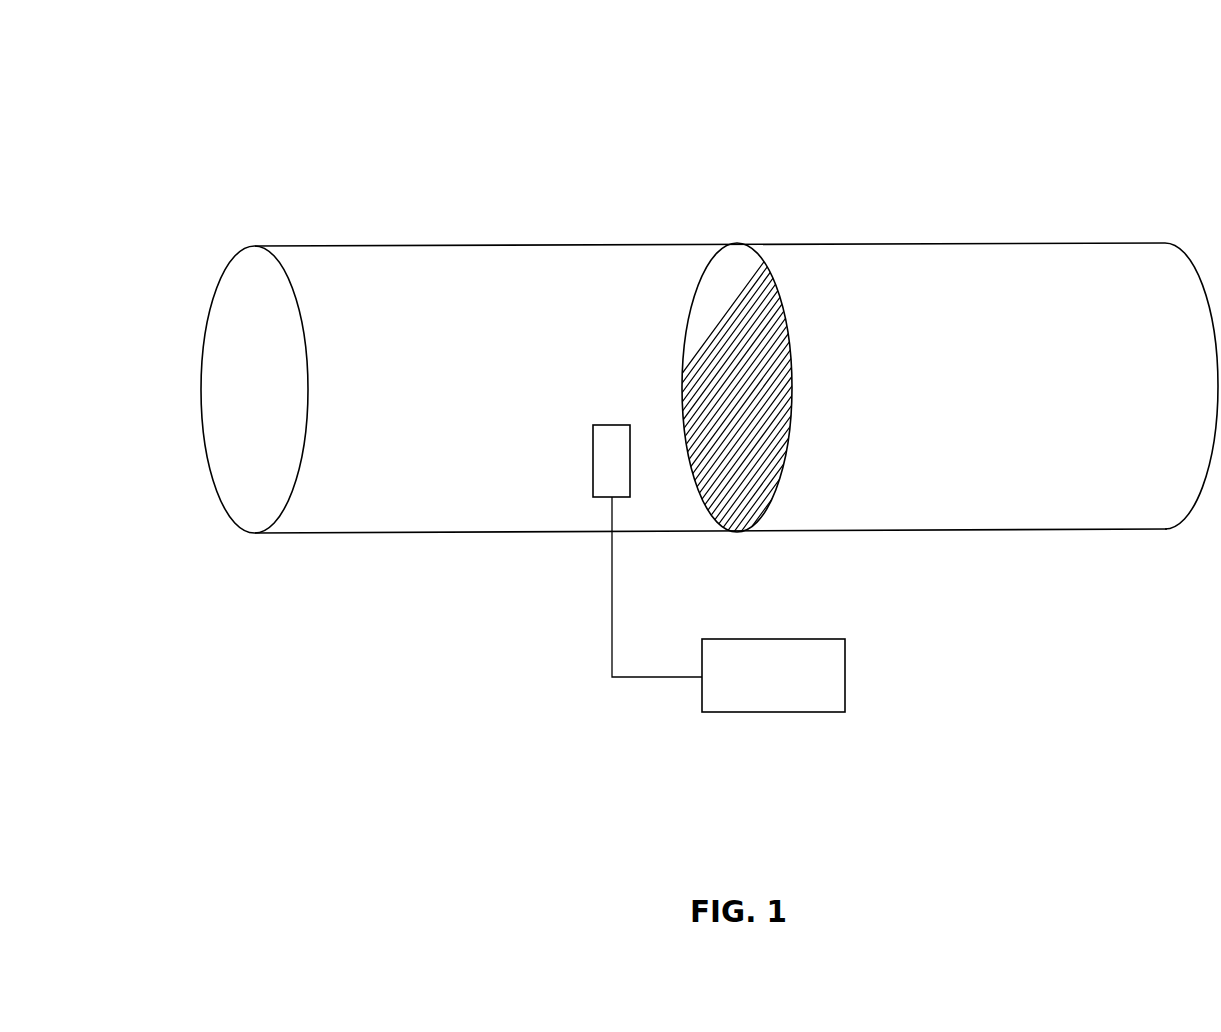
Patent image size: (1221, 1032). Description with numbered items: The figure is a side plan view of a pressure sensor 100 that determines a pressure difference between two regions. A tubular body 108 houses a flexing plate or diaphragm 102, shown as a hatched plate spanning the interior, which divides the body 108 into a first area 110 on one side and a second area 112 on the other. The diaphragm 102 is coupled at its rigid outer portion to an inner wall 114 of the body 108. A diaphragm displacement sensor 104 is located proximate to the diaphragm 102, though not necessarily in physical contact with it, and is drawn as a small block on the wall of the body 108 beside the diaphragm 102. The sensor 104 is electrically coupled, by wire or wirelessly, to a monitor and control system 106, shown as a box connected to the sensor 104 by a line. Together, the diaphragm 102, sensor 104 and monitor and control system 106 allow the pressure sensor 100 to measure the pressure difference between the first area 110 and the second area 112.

The pressure sensor 100 is at (967, 104).
The diaphragm 102 is at (773, 272).
The diaphragm displacement sensor 104 is at (593, 462).
The monitor and control system 106 is at (845, 677).
The body 108 is at (377, 245).
The first area 110 is at (362, 500).
The second area 112 is at (1019, 278).
The inner wall 114 is at (477, 533).